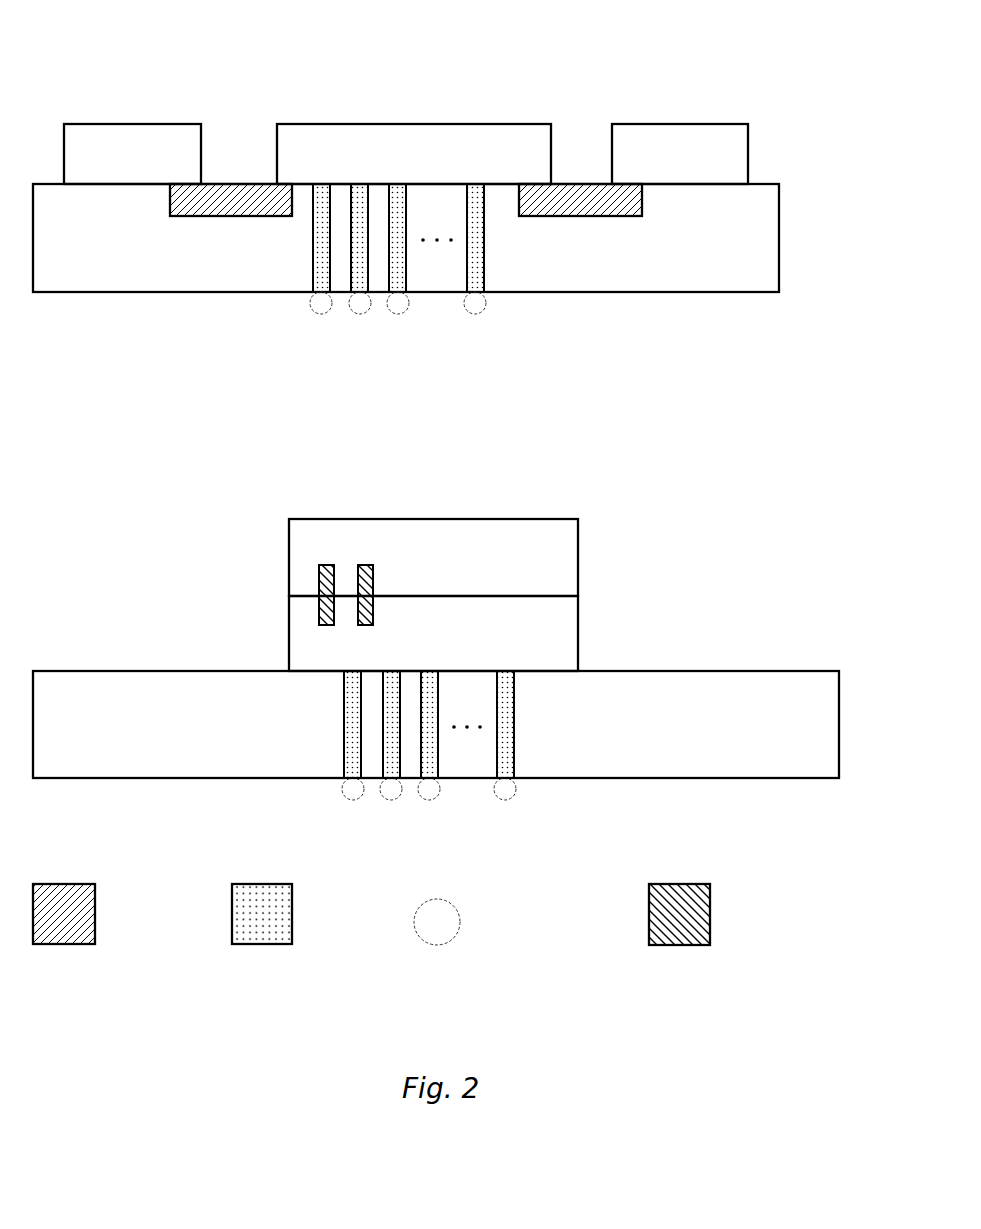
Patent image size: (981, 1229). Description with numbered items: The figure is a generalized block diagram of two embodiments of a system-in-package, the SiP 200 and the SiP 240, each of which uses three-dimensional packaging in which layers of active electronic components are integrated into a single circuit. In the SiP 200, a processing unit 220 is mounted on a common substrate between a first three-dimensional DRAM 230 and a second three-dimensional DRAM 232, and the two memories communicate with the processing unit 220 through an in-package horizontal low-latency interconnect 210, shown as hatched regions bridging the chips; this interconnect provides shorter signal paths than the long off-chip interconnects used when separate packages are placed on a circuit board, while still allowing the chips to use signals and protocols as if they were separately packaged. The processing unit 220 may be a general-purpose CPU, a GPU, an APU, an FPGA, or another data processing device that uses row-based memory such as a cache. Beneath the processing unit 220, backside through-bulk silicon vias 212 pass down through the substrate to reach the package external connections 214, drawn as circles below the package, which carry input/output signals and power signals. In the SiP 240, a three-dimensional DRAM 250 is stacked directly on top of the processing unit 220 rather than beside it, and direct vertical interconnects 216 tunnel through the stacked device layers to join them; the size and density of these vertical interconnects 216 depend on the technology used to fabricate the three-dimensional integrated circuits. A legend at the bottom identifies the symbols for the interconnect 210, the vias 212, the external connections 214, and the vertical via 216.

The system-in-package 200 is at (565, 55).
The horizontal low-latency interconnect 210 is at (142, 1025).
The through-bulk silicon vias 212 is at (384, 1023).
The package external connections 214 is at (531, 1028).
The direct vertical interconnects 216 is at (679, 945).
The processing unit 220 is at (397, 174).
The 3D DRAM 230 is at (115, 174).
The 3D DRAM 232 is at (663, 174).
The system-in-package 240 is at (563, 459).
The 3D DRAM 250 is at (498, 546).